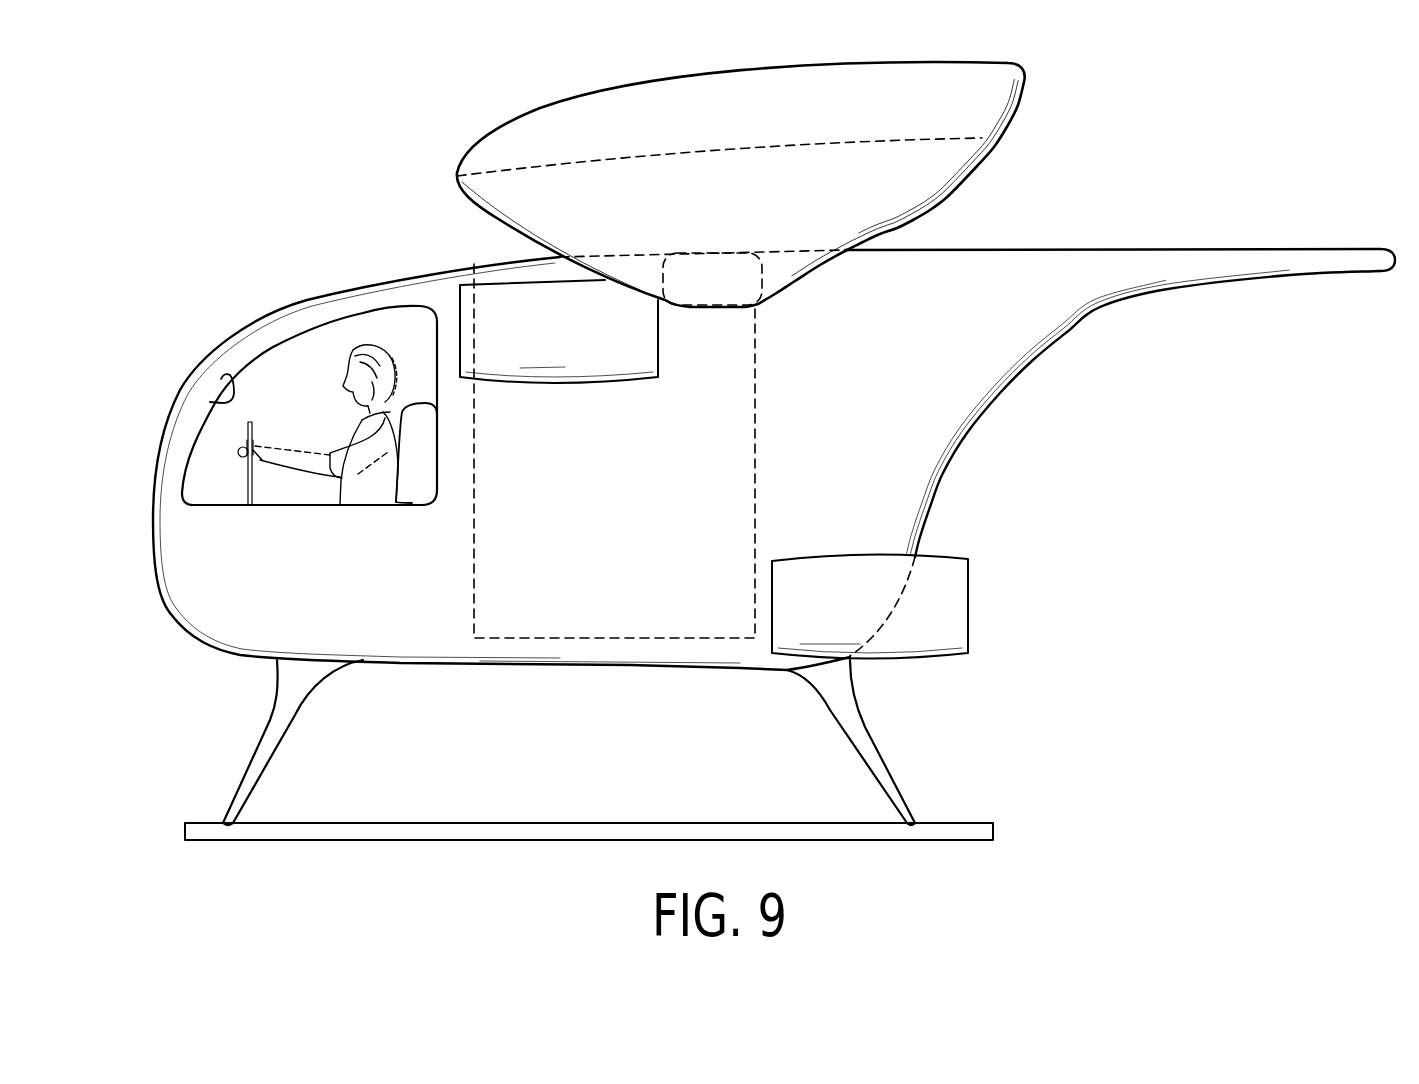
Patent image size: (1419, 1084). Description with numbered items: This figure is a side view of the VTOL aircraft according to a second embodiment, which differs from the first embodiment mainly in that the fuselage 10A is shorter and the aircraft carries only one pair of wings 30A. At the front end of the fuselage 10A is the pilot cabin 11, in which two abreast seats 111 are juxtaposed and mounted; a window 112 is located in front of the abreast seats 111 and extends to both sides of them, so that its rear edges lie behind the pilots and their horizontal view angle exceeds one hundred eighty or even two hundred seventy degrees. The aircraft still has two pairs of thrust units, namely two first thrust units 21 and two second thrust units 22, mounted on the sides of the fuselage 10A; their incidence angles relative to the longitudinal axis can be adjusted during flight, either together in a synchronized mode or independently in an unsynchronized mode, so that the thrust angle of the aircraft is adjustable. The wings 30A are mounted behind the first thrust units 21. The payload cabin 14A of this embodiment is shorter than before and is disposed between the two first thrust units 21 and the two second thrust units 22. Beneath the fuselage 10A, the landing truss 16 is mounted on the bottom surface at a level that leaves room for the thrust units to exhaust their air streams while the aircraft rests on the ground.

The fuselage 10A is at (749, 473).
The pilot cabin 11 is at (241, 326).
The abreast seats 111 is at (384, 392).
The window 112 is at (212, 402).
The first thrust units 21 is at (515, 290).
The second thrust units 22 is at (942, 628).
The payload cabin 14A is at (620, 615).
The landing truss 16 is at (322, 835).
The wings 30A is at (978, 173).